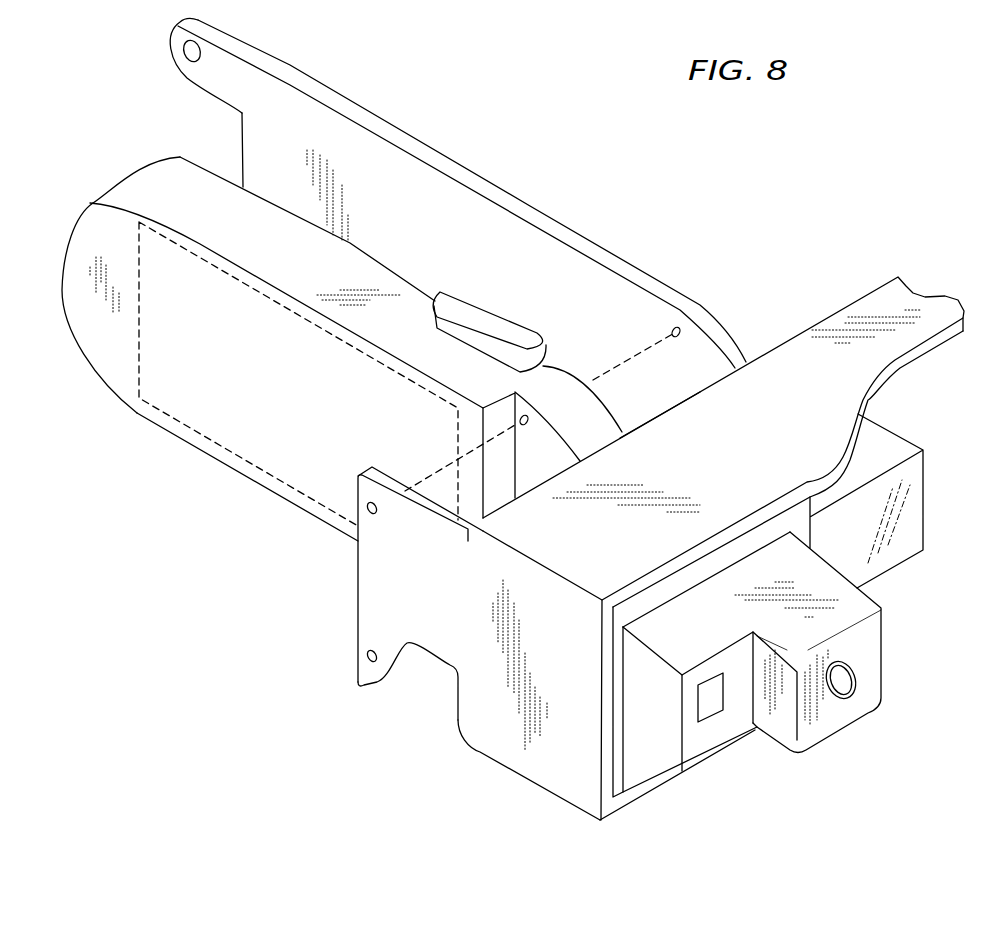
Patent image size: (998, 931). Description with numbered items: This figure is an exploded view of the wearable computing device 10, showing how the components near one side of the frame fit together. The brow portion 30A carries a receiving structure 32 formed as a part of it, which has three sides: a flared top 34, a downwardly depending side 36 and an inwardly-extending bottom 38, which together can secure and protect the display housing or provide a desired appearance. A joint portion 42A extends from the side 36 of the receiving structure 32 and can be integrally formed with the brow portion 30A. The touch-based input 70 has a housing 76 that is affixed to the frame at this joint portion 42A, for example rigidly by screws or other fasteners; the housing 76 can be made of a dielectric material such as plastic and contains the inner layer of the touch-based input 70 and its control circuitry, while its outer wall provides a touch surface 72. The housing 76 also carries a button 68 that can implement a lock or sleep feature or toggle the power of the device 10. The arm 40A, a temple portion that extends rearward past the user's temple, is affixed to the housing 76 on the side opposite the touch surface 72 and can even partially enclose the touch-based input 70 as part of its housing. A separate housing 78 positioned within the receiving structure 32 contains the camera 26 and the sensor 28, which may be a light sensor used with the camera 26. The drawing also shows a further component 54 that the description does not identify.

The device 10 is at (632, 192).
The camera 26 is at (846, 690).
The sensor 28 is at (713, 695).
The brow portion 30A is at (925, 307).
The receiving structure 32 is at (656, 831).
The flared top 34 is at (672, 412).
The downwardly depending side 36 is at (488, 735).
The inwardly-extending bottom 38 is at (703, 767).
The arm 40A is at (434, 150).
The joint portion 42A is at (358, 622).
The block 54 is at (925, 483).
The button 68 is at (478, 307).
The touch-based input 70 is at (92, 442).
The touch surface 72 is at (220, 448).
The housing 76 is at (121, 184).
The housing 78 is at (845, 615).